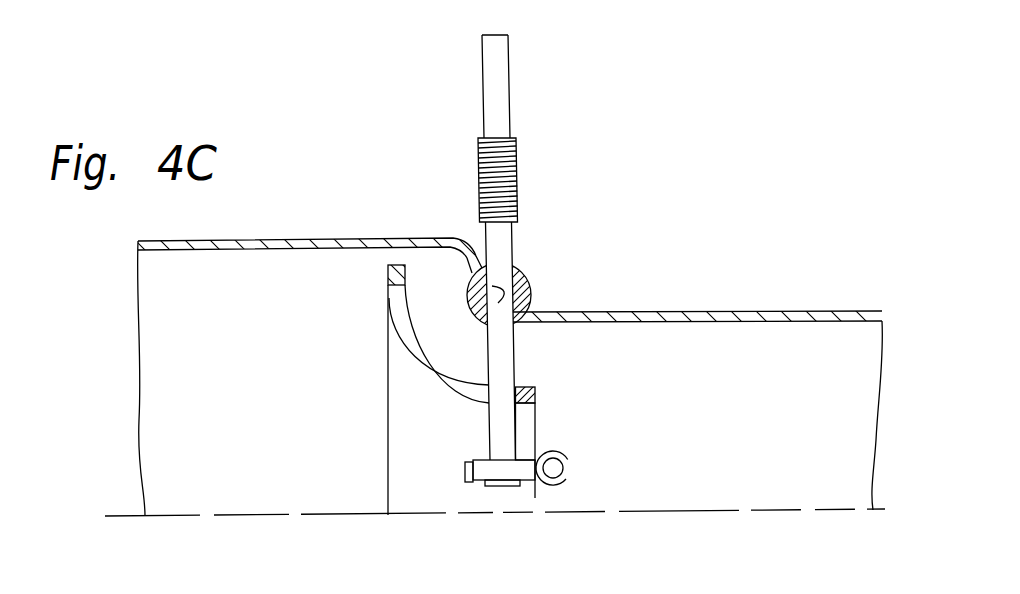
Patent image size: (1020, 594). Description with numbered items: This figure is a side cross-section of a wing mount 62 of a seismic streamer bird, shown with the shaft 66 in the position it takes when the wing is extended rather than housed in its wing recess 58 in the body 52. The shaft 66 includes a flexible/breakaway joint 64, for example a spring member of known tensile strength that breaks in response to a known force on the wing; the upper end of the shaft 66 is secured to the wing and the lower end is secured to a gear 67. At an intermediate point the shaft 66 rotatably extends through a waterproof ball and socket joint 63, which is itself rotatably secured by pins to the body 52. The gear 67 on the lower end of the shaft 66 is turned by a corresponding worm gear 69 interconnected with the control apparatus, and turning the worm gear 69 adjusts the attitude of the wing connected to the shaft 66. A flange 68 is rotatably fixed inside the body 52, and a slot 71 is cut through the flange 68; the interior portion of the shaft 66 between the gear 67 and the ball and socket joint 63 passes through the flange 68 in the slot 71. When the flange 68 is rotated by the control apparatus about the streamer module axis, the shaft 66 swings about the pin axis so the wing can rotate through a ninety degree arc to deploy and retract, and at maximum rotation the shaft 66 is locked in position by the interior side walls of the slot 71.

The body 52 is at (327, 237).
The wing recess 58 is at (835, 311).
The wing mount 62 is at (340, 448).
The ball and socket joint 63 is at (520, 273).
The flexible/breakaway joint 64 is at (517, 172).
The shaft 66 is at (508, 87).
The gear 67 is at (465, 470).
The flange 68 is at (388, 297).
The worm gear 69 is at (566, 462).
The slot 71 is at (452, 383).